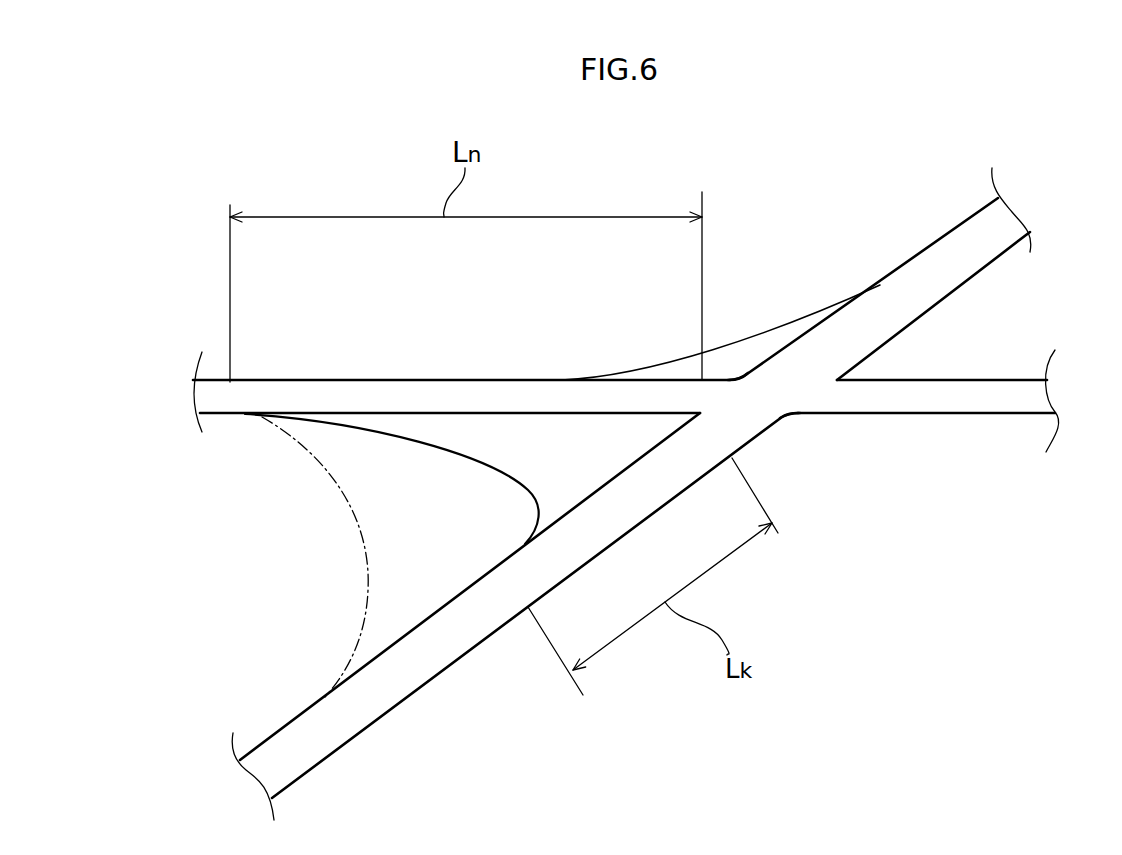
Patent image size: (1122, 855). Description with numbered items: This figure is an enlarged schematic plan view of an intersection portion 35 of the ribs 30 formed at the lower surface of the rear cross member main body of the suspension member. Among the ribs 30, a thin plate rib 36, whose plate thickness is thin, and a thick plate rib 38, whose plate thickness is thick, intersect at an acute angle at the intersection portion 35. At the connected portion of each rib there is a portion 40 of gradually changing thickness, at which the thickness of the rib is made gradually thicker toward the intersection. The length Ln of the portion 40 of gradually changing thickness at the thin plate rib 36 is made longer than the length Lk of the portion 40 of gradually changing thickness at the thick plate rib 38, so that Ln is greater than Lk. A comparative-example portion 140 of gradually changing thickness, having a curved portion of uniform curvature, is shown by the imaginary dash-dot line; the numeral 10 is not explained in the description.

The branch flow path 10 is at (505, 594).
The rib 30 is at (641, 355).
The intersection portion 35 is at (772, 397).
The thin plate rib 36 is at (922, 413).
The thick plate rib 38 is at (933, 307).
The portion of gradually changing thickness 40 is at (527, 497).
The portion of gradually changing thickness 140 is at (360, 525).